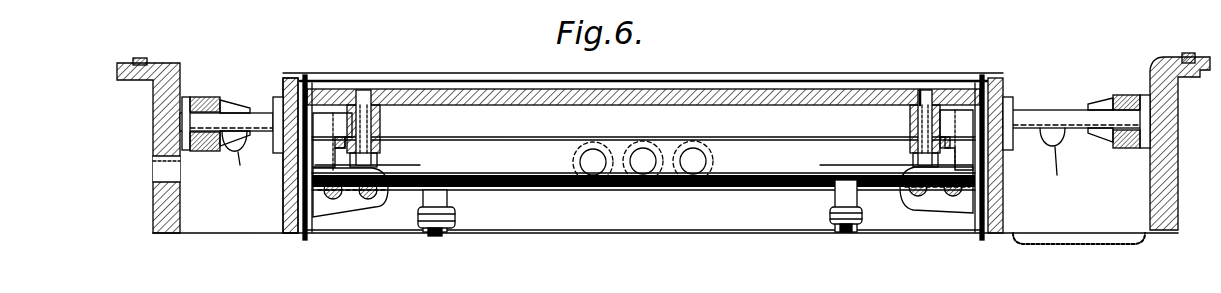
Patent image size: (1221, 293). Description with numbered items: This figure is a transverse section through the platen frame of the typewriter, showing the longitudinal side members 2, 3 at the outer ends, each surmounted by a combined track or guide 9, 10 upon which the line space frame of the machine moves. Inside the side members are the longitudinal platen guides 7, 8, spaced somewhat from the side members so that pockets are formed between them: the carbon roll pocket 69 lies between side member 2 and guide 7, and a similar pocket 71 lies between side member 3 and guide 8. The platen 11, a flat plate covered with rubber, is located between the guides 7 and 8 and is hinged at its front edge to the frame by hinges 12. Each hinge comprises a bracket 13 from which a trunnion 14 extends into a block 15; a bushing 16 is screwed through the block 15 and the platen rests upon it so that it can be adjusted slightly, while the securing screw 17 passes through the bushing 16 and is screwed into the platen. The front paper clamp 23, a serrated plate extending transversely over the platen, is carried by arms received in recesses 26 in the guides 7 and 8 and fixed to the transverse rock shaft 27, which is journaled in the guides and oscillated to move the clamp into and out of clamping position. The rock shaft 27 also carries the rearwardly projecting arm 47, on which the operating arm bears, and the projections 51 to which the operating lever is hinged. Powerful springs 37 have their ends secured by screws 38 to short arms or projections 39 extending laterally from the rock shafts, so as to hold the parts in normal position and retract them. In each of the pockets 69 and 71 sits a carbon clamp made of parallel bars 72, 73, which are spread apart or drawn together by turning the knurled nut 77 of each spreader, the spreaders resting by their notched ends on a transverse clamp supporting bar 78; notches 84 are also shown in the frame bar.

The longitudinal side member 2 is at (162, 203).
The longitudinal side member 3 is at (1178, 185).
The longitudinal platen guide 7 is at (292, 190).
The longitudinal platen guide 8 is at (1004, 210).
The track or guide 9 is at (1172, 56).
The track or guide 10 is at (156, 63).
The platen 11 is at (590, 91).
The hinge 12 is at (348, 208).
The bracket 13 is at (320, 157).
The trunnion 14 is at (372, 126).
The block 15 is at (906, 150).
The bushing 16 is at (372, 156).
The securing screw 17 is at (372, 166).
The front paper clamp 23 is at (512, 78).
The recess 26 is at (286, 210).
The transverse rock shaft 27 is at (514, 140).
The spring 37 is at (457, 226).
The screw 38 is at (434, 236).
The short arm or projection 39 is at (450, 196).
The arm 47 is at (644, 156).
The projection 51 is at (590, 174).
The carbon roll pocket 69 is at (1079, 218).
The pocket 71 is at (212, 207).
The bar 72 is at (283, 100).
The bar 73 is at (184, 110).
The adjusting member 77 is at (210, 96).
The clamp supporting bar 78 is at (246, 118).
The notch 84 is at (647, 162).